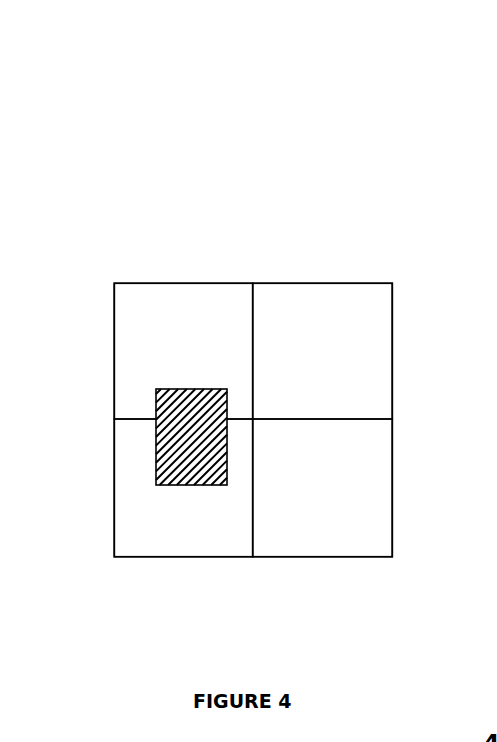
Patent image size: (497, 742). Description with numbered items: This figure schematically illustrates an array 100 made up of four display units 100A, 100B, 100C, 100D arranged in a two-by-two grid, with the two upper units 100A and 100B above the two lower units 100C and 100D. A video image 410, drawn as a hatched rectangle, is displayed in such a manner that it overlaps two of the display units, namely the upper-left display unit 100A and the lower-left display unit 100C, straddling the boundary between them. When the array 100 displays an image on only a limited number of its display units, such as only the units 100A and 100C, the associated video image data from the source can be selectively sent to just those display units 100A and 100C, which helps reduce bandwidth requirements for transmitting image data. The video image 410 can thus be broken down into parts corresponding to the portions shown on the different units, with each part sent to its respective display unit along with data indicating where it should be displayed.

The array 100 is at (124, 82).
The display unit 100A is at (174, 283).
The display unit 100B is at (313, 283).
The display unit 100C is at (176, 557).
The display unit 100D is at (313, 557).
The video image 410 is at (155, 442).